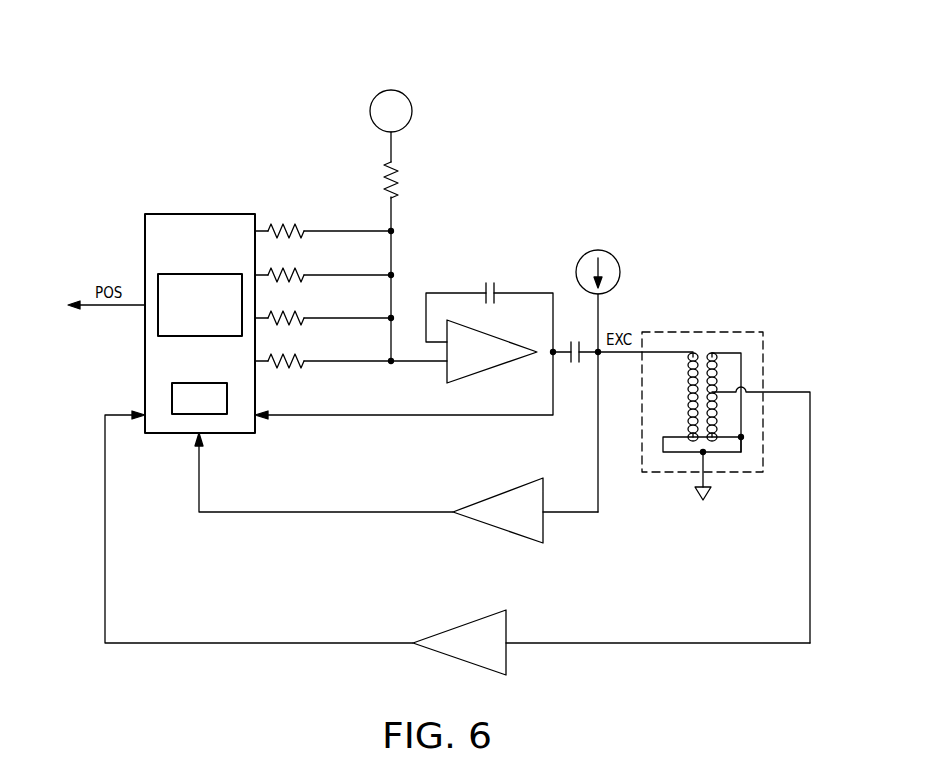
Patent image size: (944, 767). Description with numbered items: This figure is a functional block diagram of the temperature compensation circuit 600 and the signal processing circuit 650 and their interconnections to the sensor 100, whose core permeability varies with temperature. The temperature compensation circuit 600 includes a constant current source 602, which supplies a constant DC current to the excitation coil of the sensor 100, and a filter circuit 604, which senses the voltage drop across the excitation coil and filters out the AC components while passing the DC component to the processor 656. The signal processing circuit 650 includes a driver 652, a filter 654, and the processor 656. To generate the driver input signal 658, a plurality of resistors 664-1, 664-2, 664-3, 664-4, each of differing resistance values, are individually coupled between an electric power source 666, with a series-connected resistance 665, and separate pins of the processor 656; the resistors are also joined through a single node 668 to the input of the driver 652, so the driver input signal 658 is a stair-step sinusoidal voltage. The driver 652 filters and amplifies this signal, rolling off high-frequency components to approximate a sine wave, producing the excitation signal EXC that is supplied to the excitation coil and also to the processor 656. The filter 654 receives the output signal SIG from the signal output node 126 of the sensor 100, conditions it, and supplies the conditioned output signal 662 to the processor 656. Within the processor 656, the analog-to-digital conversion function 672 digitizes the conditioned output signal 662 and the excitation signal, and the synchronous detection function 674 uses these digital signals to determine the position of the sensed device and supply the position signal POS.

The sensor 100 is at (745, 312).
The signal output node 126 is at (758, 392).
The temperature compensation circuit 600 is at (641, 253).
The constant current source 602 is at (602, 249).
The filter circuit 604 is at (545, 530).
The signal processing circuit 650 is at (405, 302).
The driver 652 is at (495, 368).
The filter 654 is at (465, 625).
The processor 656 is at (200, 214).
The driver input signal 658 is at (410, 364).
The conditioned output signal 662 is at (222, 643).
The resistor 664-1 is at (293, 230).
The resistor 664-2 is at (282, 274).
The resistor 664-3 is at (282, 317).
The resistor 664-4 is at (282, 360).
The series-connected resistance 665 is at (398, 178).
The electric power source 666 is at (390, 92).
The single node 668 is at (390, 364).
The analog-to-digital conversion function 672 is at (181, 414).
The synchronous detection function 674 is at (222, 338).